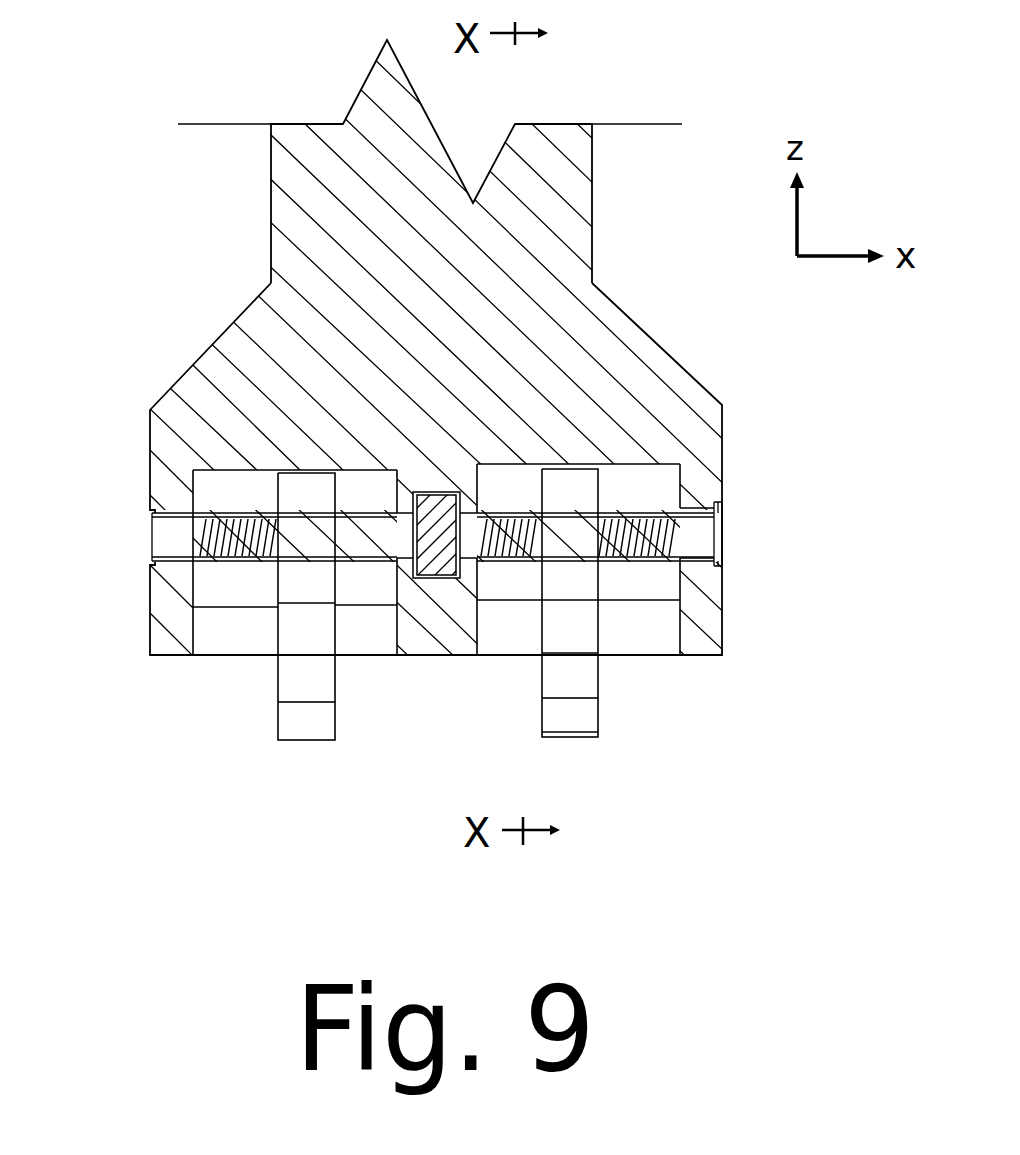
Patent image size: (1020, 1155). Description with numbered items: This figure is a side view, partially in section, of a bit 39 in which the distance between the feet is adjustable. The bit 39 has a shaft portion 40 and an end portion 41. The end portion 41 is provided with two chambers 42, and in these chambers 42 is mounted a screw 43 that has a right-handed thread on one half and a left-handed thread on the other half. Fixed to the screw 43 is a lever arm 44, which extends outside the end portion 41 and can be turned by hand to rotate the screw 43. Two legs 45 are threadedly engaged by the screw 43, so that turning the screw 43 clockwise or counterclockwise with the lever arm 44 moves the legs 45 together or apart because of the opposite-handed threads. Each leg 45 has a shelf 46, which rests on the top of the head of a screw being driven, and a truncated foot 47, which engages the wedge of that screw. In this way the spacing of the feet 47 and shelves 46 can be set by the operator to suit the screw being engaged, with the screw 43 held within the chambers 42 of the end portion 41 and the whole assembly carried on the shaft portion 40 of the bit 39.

The bit 39 is at (719, 216).
The shaft portion 40 is at (270, 202).
The end portion 41 is at (723, 438).
The chambers 42 is at (637, 577).
The screw 43 is at (723, 528).
The lever arm 44 is at (440, 568).
The legs 45 is at (555, 678).
The shelf 46 is at (292, 703).
The truncated foot 47 is at (563, 717).